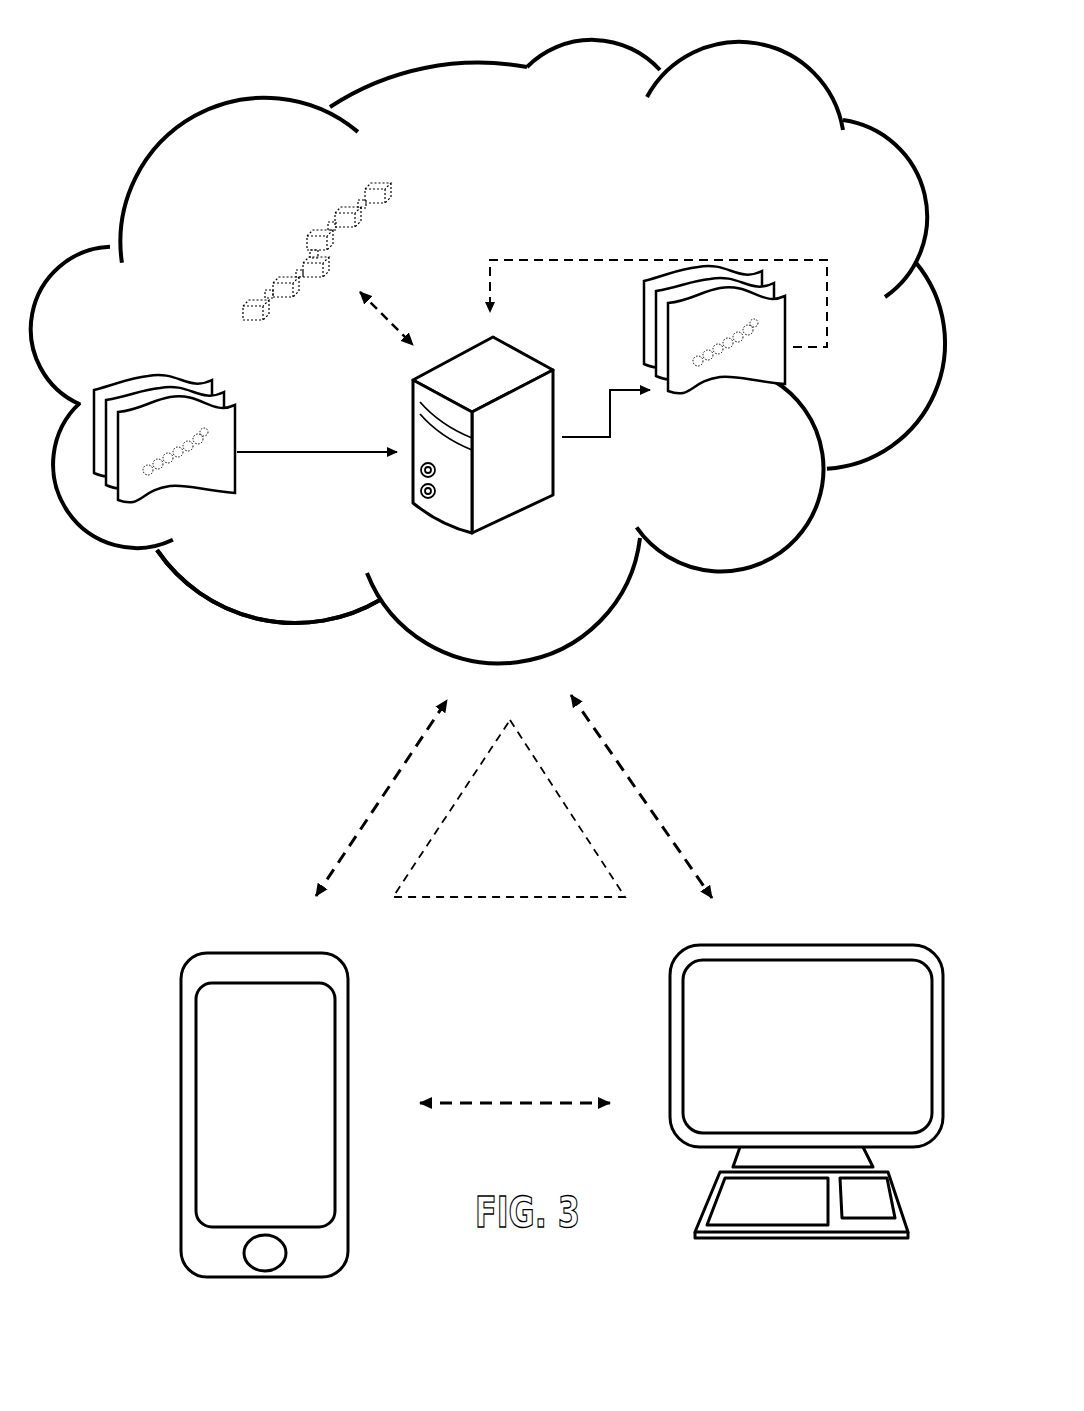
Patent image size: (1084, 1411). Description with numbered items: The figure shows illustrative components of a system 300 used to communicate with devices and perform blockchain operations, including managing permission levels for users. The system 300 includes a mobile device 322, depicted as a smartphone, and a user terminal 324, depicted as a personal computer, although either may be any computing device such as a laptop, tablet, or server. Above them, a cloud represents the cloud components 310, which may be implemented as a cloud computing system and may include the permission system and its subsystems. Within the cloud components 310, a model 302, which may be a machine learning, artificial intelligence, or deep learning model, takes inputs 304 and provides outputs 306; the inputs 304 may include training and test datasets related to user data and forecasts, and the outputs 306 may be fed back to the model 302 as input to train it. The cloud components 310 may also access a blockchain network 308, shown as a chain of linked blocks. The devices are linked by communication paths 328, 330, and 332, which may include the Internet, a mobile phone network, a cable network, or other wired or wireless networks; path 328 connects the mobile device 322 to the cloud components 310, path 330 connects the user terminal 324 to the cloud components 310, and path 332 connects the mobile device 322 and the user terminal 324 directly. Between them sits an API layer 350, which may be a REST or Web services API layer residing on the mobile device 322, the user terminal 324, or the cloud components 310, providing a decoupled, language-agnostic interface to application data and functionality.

The system 300 is at (876, 80).
The model 302 is at (514, 535).
The inputs 304 is at (160, 376).
The outputs 306 is at (744, 368).
The blockchain network 308 is at (416, 195).
The cloud components 310 is at (248, 586).
The mobile device 322 is at (250, 908).
The user terminal 324 is at (801, 930).
The communication path 328 is at (337, 780).
The communication path 330 is at (721, 748).
The communication path 332 is at (506, 1068).
The API layer 350 is at (530, 833).